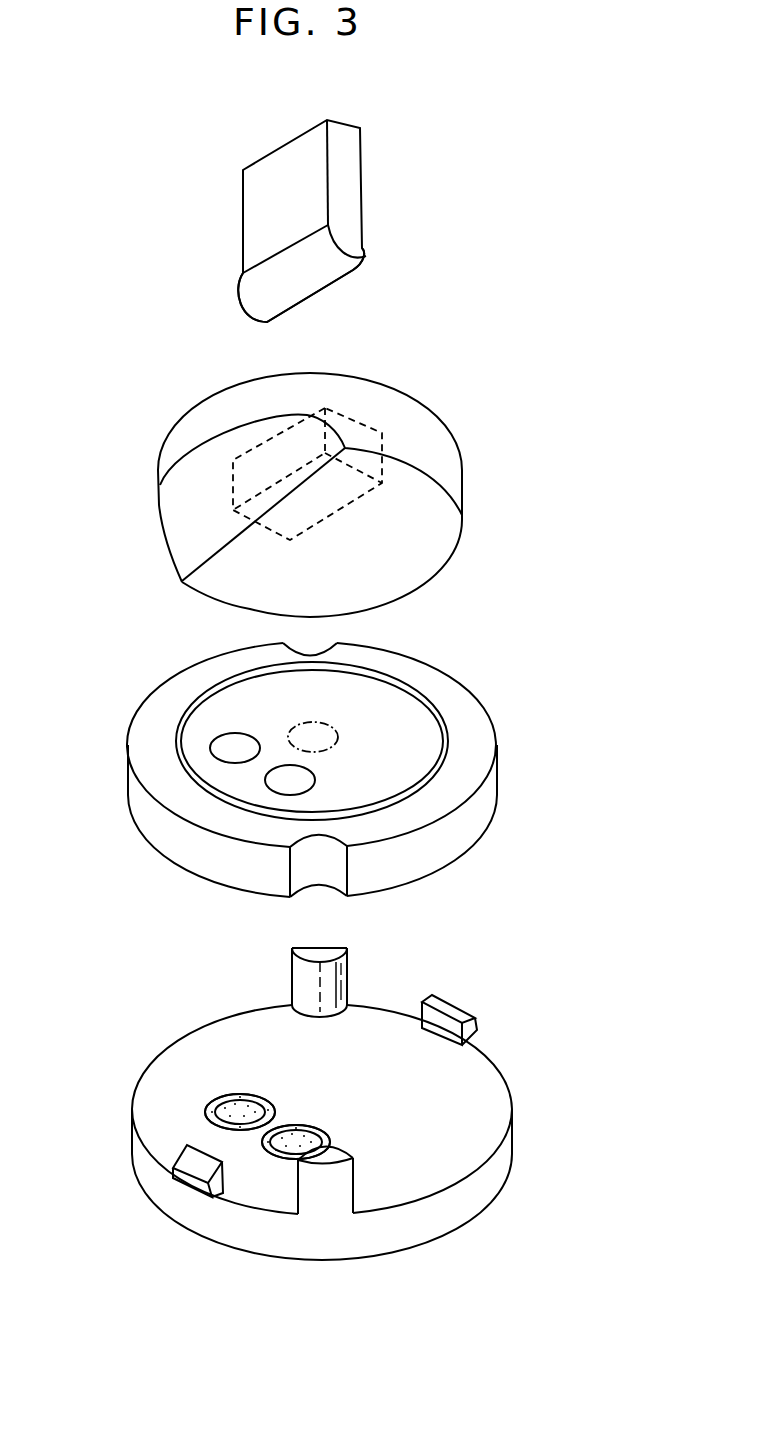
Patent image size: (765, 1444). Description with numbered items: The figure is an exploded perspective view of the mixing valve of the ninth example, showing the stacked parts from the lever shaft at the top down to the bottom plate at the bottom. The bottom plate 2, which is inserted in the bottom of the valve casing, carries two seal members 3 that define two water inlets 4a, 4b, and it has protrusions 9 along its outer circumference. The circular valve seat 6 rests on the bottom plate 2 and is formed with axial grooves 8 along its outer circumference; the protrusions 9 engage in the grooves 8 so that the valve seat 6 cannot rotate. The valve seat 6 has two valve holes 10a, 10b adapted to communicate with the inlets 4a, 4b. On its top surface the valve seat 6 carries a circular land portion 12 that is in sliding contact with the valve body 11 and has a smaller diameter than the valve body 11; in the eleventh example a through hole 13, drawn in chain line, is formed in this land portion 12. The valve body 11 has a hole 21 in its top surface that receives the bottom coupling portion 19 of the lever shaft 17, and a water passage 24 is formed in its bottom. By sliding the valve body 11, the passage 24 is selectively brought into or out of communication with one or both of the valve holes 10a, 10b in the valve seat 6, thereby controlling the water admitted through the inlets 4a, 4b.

The bottom plate 2 is at (138, 1107).
The seal member 3 is at (220, 1100).
The water inlet 4a is at (270, 1163).
The water inlet 4b is at (247, 1112).
The valve seat 6 is at (138, 805).
The axial groove 8 is at (327, 860).
The protrusion 9 is at (333, 973).
The valve hole 10a is at (267, 793).
The valve hole 10b is at (218, 743).
The valve body 11 is at (460, 487).
The land portion 12 is at (412, 708).
The through hole 13 is at (333, 727).
The lever shaft 17 is at (250, 190).
The bottom coupling portion 19 is at (355, 243).
The hole 21 is at (259, 449).
The water passage 24 is at (185, 537).